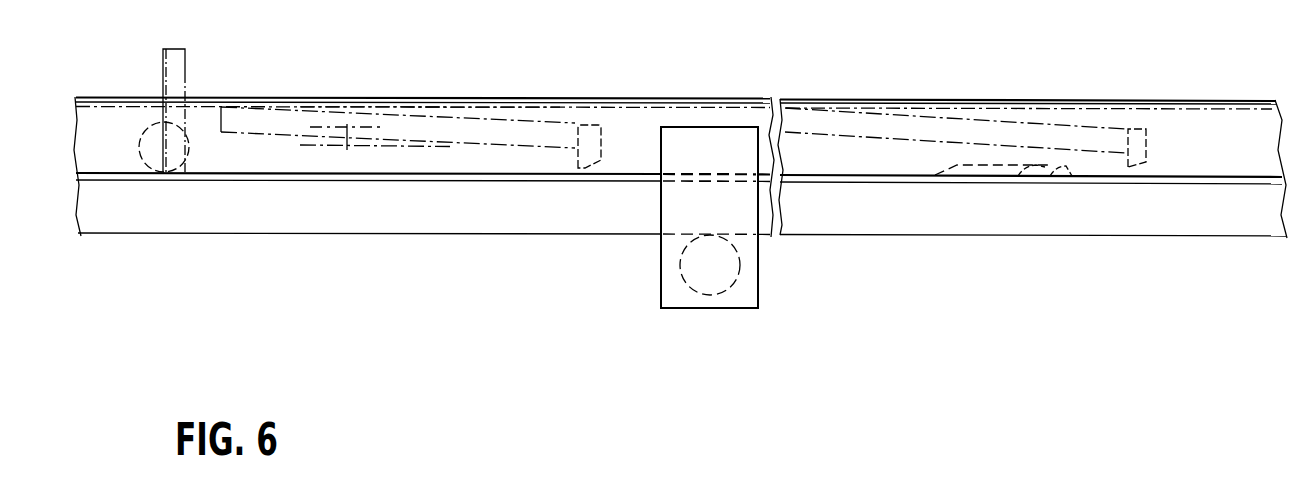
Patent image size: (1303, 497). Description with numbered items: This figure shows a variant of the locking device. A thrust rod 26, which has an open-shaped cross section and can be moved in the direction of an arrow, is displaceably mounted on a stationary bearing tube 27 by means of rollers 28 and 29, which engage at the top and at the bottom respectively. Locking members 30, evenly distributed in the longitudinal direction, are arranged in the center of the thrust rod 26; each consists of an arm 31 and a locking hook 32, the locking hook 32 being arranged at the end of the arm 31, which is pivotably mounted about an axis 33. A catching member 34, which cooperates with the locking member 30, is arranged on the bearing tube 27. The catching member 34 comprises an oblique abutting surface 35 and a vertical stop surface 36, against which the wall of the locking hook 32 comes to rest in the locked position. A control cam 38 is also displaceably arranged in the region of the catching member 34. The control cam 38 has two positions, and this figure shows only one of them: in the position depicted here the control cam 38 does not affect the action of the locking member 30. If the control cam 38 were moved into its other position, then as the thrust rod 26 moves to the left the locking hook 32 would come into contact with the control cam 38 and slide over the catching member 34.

The thrust rod 26 is at (360, 162).
The bearing tube 27 is at (333, 227).
The roller 28 is at (145, 130).
The roller 29 is at (740, 268).
The locking member 30 is at (459, 104).
The arm 31 is at (375, 122).
The locking hook 32 is at (594, 130).
The axis 33 is at (347, 127).
The catching member 34 is at (1058, 168).
The oblique abutting surface 35 is at (1028, 178).
The vertical stop surface 36 is at (1072, 180).
The control cam 38 is at (972, 168).